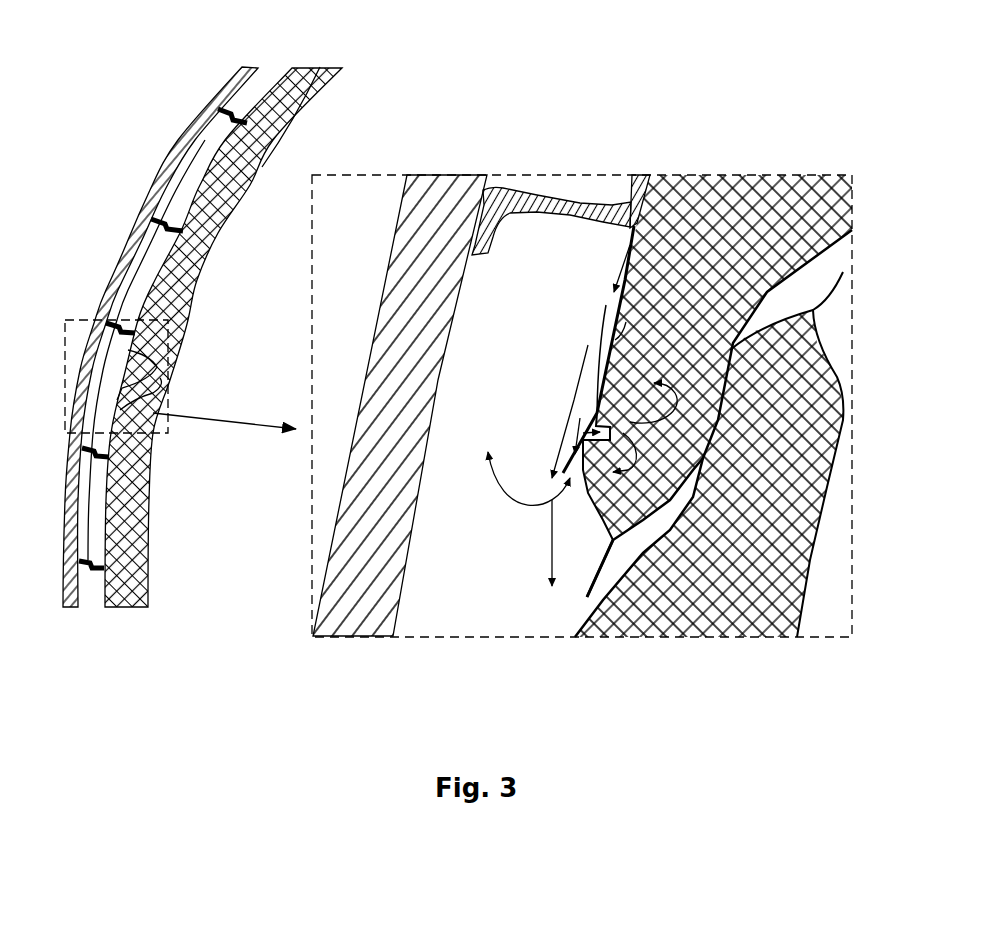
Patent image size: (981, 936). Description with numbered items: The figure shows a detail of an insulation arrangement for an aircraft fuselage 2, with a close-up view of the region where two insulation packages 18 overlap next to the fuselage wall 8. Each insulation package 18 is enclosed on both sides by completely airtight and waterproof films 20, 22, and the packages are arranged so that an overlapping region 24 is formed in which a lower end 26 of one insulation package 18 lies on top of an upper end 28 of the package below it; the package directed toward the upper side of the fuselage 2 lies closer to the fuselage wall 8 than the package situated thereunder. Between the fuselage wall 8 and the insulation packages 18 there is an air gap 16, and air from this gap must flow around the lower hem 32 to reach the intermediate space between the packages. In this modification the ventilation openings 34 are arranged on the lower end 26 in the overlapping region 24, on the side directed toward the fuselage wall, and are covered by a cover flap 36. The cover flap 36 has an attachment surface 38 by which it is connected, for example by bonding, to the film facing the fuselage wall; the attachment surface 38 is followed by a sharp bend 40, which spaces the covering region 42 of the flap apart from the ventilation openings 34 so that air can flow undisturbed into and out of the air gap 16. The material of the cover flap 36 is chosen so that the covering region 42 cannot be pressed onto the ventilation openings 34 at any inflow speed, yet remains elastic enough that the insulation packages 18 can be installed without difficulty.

The fuselage 2 is at (188, 76).
The fuselage wall 8 is at (377, 333).
The air gap 16 is at (485, 268).
The insulation package 18 is at (262, 167).
The film 20 is at (184, 182).
The film 22 is at (240, 236).
The overlapping region 24 is at (157, 367).
The lower end 26 is at (128, 382).
The upper end 28 is at (153, 393).
The lower hem 32 is at (590, 577).
The ventilation openings 34 is at (616, 389).
The cover flap 36 is at (570, 388).
The attachment surface 38 is at (615, 340).
The sharp bend 40 is at (592, 360).
The covering region 42 is at (563, 450).